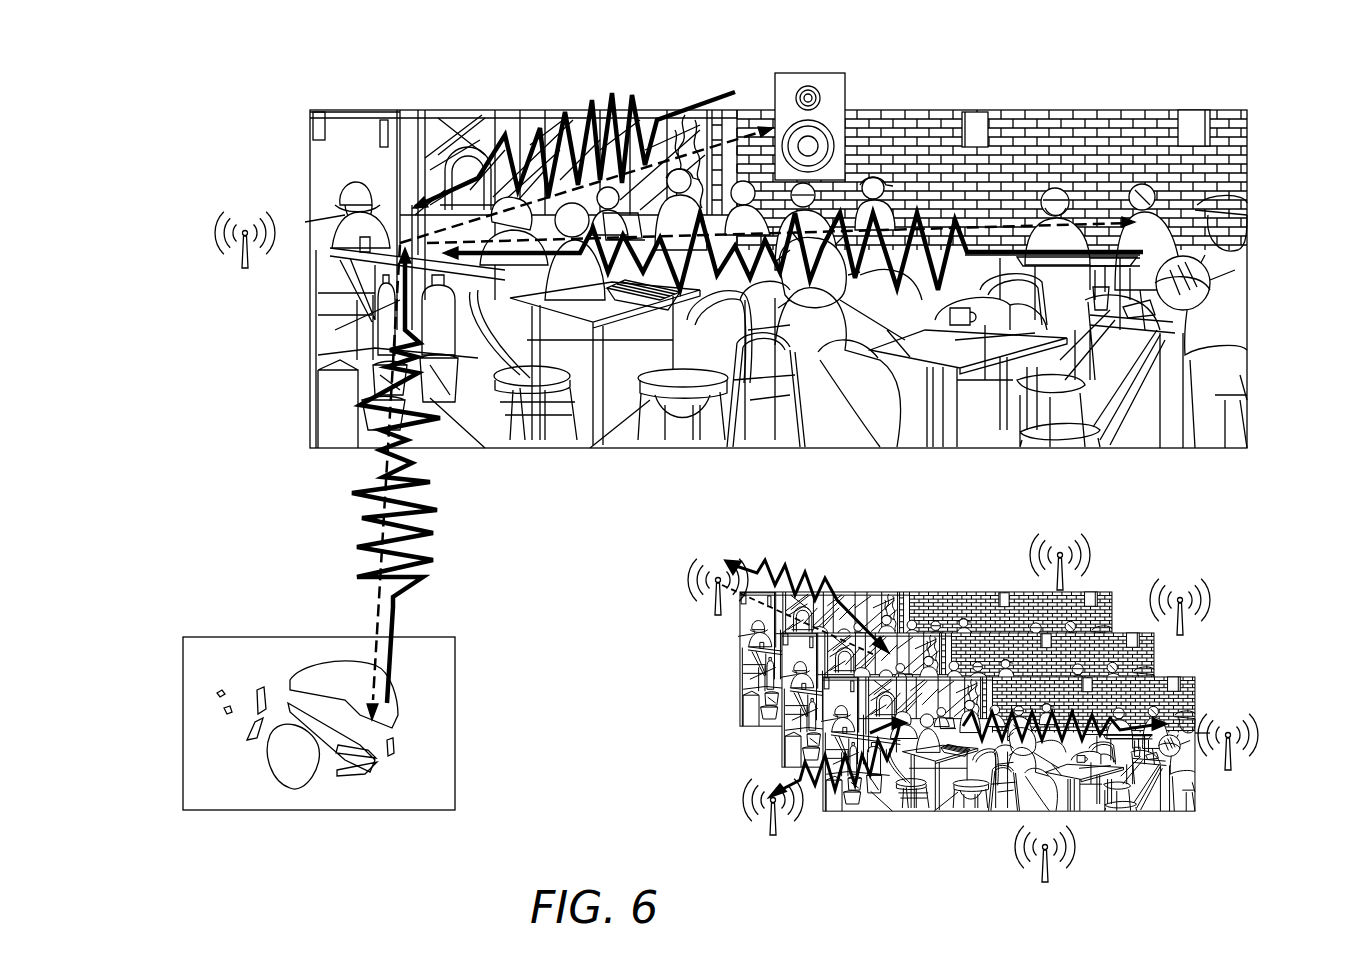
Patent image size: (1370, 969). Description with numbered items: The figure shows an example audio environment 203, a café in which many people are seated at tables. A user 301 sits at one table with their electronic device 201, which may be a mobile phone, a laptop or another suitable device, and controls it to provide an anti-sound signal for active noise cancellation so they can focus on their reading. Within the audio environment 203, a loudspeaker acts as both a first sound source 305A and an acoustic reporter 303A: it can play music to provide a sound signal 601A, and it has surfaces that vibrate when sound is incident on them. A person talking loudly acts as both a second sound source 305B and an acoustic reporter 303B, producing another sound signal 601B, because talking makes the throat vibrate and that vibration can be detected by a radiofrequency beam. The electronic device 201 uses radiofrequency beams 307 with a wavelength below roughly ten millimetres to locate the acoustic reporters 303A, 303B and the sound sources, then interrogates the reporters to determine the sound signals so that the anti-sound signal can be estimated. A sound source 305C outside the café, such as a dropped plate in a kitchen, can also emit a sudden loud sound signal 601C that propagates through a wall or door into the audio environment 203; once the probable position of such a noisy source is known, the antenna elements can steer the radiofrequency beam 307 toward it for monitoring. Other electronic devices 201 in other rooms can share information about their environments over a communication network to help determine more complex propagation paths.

The electronic device 201 is at (400, 243).
The audio environment 203 is at (976, 110).
The user 301 is at (350, 182).
The acoustic reporter 303A is at (848, 88).
The acoustic reporter 303B is at (1140, 192).
The first sound source 305A is at (858, 99).
The second sound source 305B is at (1195, 217).
The sound source 305C is at (355, 780).
The radiofrequency beam 307 is at (312, 224).
The sound signal 601A is at (615, 92).
The sound signal 601B is at (962, 225).
The sound signal 601C is at (445, 514).